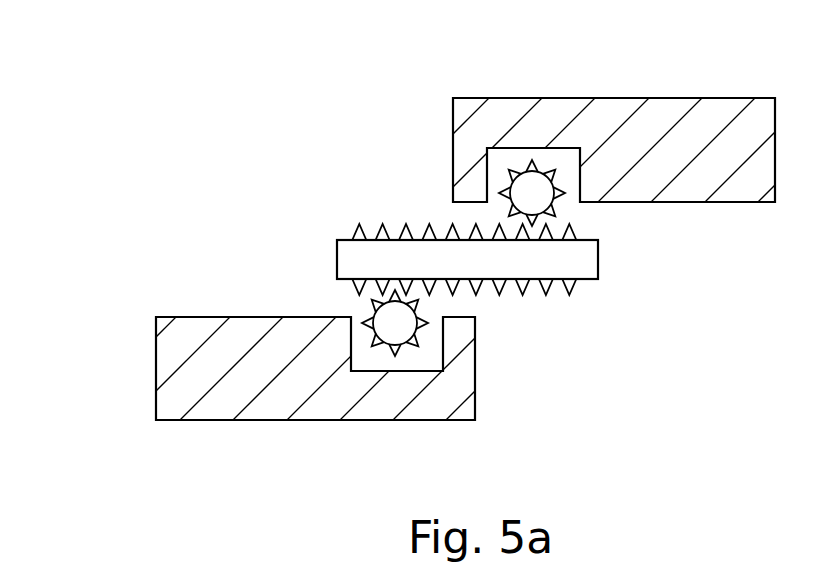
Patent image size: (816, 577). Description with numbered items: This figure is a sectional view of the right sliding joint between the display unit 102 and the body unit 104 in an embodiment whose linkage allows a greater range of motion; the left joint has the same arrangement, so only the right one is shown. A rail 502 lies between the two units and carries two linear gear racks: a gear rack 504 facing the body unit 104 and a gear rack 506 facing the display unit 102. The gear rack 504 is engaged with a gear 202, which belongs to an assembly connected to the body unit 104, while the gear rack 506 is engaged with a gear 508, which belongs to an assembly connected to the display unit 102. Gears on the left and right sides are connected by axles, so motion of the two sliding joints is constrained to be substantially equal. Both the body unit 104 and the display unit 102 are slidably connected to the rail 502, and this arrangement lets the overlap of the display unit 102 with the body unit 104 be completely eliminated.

The display unit 102 is at (483, 128).
The body unit 104 is at (200, 370).
The gear 202 is at (396, 330).
The rail 502 is at (585, 259).
The linear gear rack 504 is at (614, 282).
The linear gear rack 506 is at (322, 231).
The gear 508 is at (532, 192).